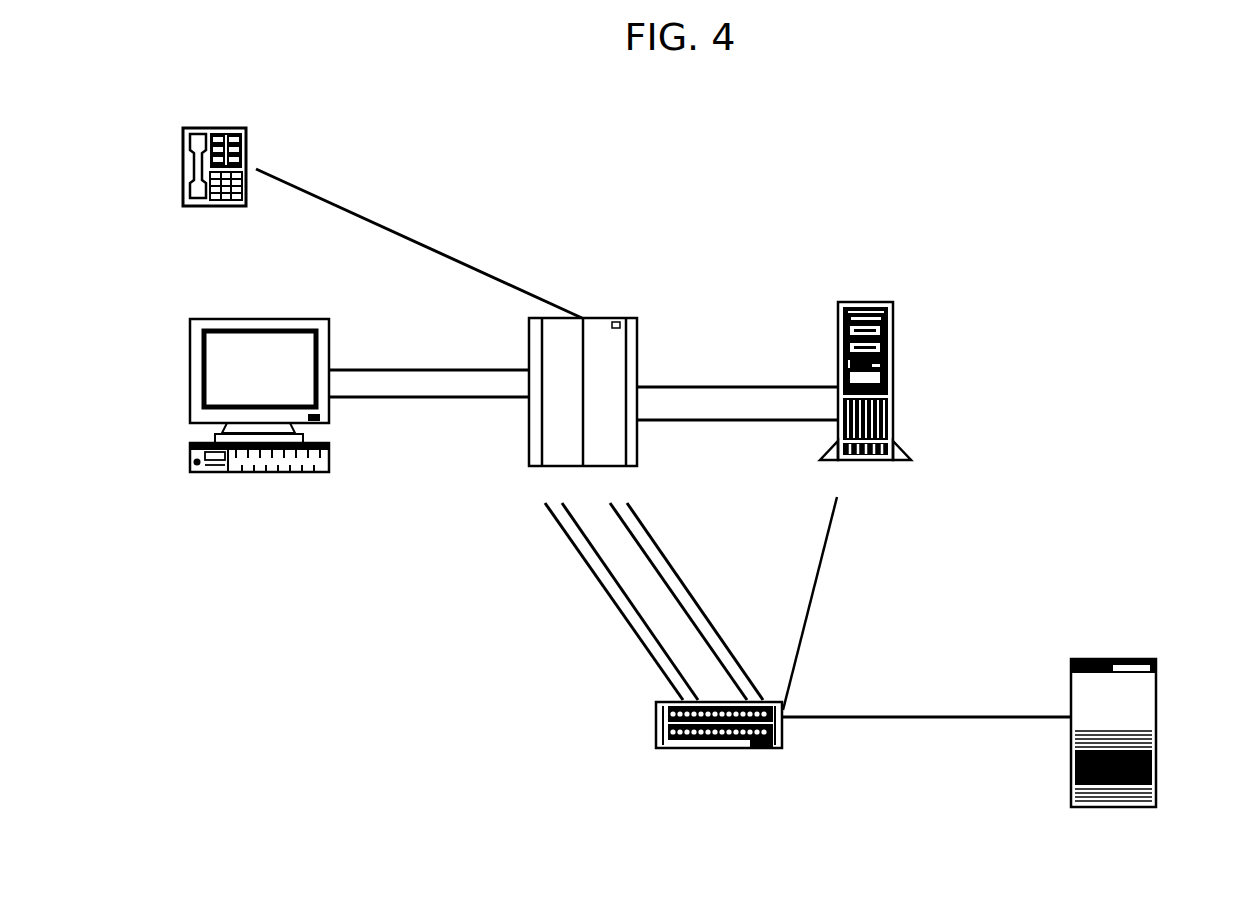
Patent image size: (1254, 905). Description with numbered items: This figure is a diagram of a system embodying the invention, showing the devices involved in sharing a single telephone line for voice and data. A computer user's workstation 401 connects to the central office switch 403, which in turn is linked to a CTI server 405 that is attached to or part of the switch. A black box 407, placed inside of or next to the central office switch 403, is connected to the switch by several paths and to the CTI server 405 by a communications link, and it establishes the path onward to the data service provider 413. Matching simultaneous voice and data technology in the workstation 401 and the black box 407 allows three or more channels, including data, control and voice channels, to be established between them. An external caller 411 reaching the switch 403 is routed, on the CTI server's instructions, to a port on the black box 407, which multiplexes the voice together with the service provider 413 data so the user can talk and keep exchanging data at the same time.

The workstation 401 is at (259, 395).
The central office switch 403 is at (585, 395).
The CTI server 405 is at (865, 385).
The black box 407 is at (697, 752).
The external caller 411 is at (215, 168).
The service provider 413 is at (1115, 736).